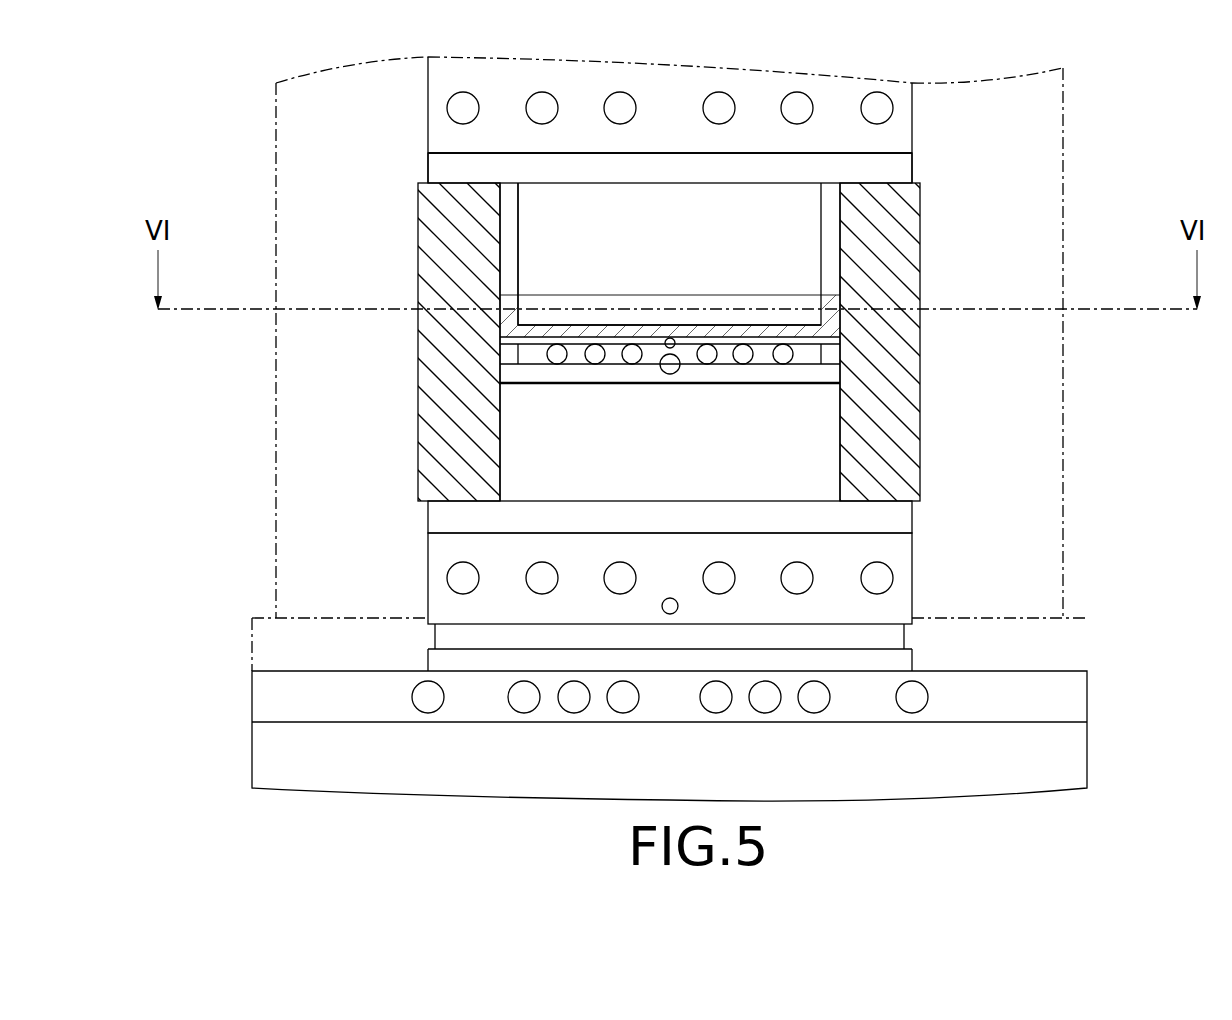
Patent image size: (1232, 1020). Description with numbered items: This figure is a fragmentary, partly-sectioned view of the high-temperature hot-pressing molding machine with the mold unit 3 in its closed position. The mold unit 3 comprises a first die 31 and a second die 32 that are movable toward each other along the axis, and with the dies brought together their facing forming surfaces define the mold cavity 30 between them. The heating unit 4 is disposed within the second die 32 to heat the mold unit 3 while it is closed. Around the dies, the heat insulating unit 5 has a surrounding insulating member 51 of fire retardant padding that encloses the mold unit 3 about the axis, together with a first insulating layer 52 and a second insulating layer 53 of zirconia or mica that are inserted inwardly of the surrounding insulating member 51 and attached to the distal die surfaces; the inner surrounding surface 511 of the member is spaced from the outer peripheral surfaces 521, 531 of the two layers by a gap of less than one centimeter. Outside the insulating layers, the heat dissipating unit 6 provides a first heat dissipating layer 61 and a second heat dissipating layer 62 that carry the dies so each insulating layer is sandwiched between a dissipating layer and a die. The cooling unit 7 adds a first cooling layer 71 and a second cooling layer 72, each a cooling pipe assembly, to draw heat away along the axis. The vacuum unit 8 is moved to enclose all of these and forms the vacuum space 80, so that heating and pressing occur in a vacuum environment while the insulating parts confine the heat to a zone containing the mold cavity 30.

The mold unit 3 is at (498, 279).
The heating unit 4 is at (790, 366).
The heat insulating unit 5 is at (927, 281).
The heat dissipating unit 6 is at (650, 160).
The cooling unit 7 is at (660, 120).
The vacuum unit 8 is at (1066, 565).
The mold cavity 30 is at (840, 332).
The first die 31 is at (523, 303).
The second die 32 is at (500, 320).
The surrounding insulating member 51 is at (920, 380).
The first insulating layer 52 is at (518, 222).
The second insulating layer 53 is at (500, 407).
The first heat dissipating layer 61 is at (428, 170).
The second heat dissipating layer 62 is at (428, 515).
The first cooling layer 71 is at (428, 103).
The second cooling layer 72 is at (428, 578).
The vacuum space 80 is at (989, 528).
The inner surrounding surface 511 is at (460, 452).
The outer peripheral surface 521 is at (821, 222).
The outer peripheral surface 531 is at (840, 462).